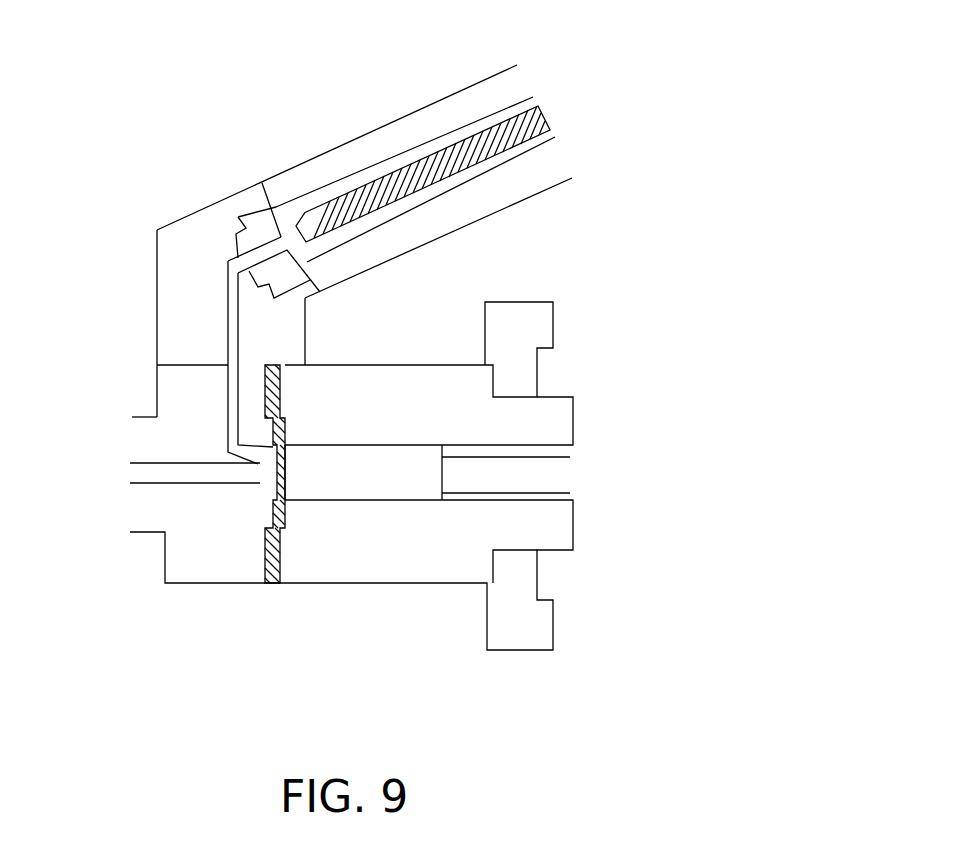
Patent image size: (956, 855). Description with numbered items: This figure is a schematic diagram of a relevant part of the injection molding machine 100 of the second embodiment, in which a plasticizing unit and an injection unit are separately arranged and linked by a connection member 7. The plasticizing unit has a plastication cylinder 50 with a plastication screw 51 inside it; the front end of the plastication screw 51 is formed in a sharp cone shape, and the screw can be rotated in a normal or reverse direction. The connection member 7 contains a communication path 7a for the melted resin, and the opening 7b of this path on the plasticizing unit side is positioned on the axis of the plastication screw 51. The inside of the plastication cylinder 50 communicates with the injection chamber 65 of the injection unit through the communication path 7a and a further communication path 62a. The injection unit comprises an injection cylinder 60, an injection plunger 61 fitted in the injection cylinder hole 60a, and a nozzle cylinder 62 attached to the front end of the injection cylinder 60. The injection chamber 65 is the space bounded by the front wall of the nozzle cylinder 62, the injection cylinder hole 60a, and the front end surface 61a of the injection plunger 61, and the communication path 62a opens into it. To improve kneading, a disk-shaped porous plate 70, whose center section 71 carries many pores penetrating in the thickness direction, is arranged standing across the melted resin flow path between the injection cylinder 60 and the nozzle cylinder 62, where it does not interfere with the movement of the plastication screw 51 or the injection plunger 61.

The connection member 7 is at (207, 217).
The communication path 7a is at (230, 293).
The opening 7b is at (268, 207).
The plastication cylinder 50 is at (495, 98).
The plastication screw 51 is at (393, 177).
The injection cylinder 60 is at (432, 565).
The injection cylinder hole 60a is at (323, 497).
The injection plunger 61 is at (398, 458).
The front end surface 61a is at (347, 455).
The nozzle cylinder 62 is at (208, 563).
The communication path 62a is at (230, 397).
The injection chamber 65 is at (342, 467).
The porous plate 70 is at (268, 587).
The center section 71 is at (273, 492).
The injection molding machine 100 is at (710, 709).